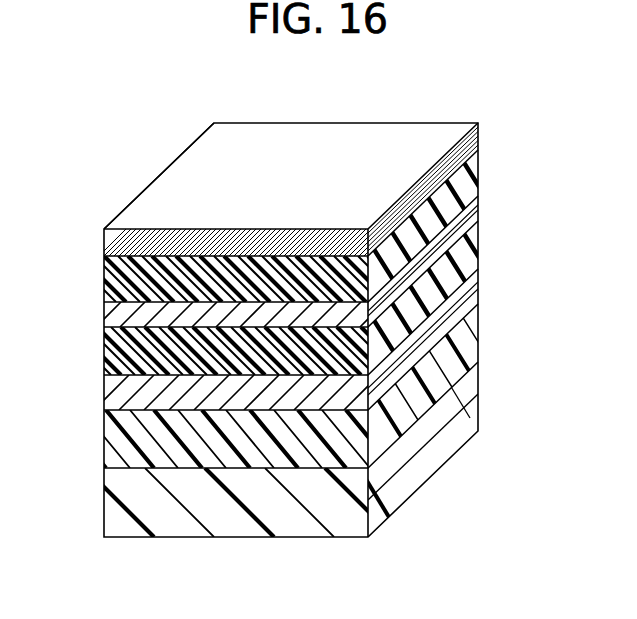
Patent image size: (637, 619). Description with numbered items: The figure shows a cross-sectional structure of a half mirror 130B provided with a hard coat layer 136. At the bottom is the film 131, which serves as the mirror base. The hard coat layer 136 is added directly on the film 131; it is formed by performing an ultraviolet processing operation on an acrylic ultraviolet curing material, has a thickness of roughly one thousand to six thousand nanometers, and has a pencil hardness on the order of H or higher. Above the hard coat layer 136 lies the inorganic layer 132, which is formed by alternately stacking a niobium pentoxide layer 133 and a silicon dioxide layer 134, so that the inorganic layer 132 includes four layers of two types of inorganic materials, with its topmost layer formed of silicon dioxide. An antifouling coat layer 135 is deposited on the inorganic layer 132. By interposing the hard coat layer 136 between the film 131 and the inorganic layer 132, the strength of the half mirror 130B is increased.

The half mirror 130B is at (241, 96).
The film 131 is at (97, 468).
The inorganic layer 132 is at (97, 256).
The niobium pentoxide layer 133 is at (469, 211).
The silicon dioxide layer 134 is at (474, 170).
The antifouling coat layer 135 is at (478, 133).
The hard coat layer 136 is at (97, 410).